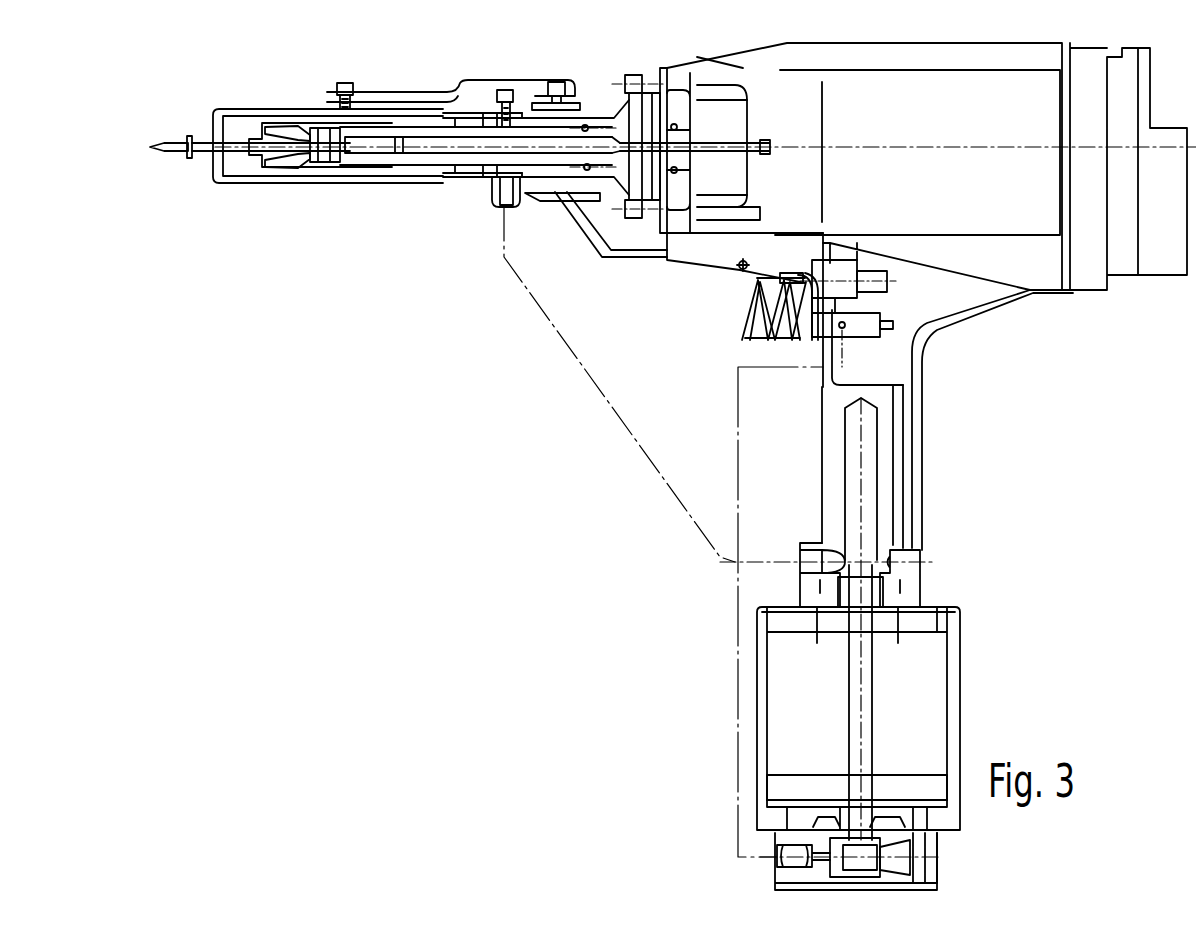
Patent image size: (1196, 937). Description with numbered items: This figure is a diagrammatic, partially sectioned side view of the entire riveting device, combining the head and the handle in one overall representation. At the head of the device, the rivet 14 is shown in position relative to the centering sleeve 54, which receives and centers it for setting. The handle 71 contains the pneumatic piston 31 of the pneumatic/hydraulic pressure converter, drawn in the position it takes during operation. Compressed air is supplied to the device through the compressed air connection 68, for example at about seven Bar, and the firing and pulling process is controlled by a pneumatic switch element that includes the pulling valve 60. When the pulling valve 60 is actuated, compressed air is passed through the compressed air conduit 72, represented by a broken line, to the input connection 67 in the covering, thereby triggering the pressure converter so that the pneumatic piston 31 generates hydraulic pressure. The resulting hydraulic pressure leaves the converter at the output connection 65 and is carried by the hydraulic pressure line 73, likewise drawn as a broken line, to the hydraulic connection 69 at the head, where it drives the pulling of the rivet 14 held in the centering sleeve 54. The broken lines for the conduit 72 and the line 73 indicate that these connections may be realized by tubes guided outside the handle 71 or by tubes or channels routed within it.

The rivet 14 is at (176, 137).
The centering sleeve 54 is at (267, 109).
The hydraulic connection 69 is at (508, 208).
The hydraulic pressure line 73 is at (577, 357).
The pulling valve 60 is at (823, 332).
The handle 71 is at (945, 463).
The output connection 65 is at (800, 556).
The compressed air connection 68 is at (945, 562).
The compressed air conduit 72 is at (737, 634).
The pneumatic piston 31 is at (923, 787).
The input connection 67 is at (777, 863).